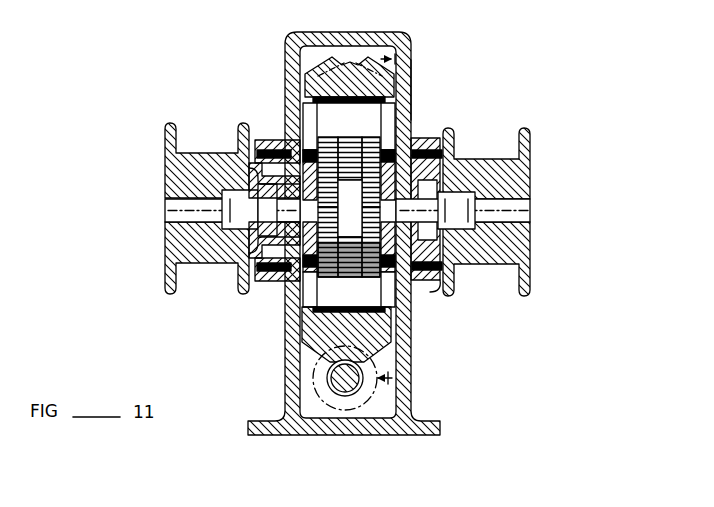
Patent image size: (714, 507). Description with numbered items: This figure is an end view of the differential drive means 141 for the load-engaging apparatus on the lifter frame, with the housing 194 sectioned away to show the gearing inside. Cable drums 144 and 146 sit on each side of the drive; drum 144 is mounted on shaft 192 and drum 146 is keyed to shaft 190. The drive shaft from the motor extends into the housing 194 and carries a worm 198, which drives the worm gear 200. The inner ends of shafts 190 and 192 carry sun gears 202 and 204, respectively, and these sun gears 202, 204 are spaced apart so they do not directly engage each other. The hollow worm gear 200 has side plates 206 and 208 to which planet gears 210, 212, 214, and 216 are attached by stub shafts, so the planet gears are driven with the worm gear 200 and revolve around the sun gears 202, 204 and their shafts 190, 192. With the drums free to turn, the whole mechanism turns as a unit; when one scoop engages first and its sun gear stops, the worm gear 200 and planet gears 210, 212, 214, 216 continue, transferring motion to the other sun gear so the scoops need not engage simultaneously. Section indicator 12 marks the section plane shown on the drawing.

The differential drive means 141 is at (392, 32).
The housing 194 is at (408, 92).
The side plate 208 is at (388, 133).
The sun gear 204 is at (410, 280).
The cable drum 146 is at (527, 130).
The shaft 190 is at (530, 212).
The cable drum 144 is at (172, 123).
The shaft 192 is at (170, 206).
The sun gear 202 is at (287, 263).
The worm gear 200 is at (316, 62).
The side plate 206 is at (306, 120).
The planet gear 210 is at (325, 143).
The planet gear 212 is at (370, 143).
The planet gear 216 is at (325, 277).
The planet gear 214 is at (367, 277).
The worm 198 is at (342, 390).
The section line 12 is at (372, 229).